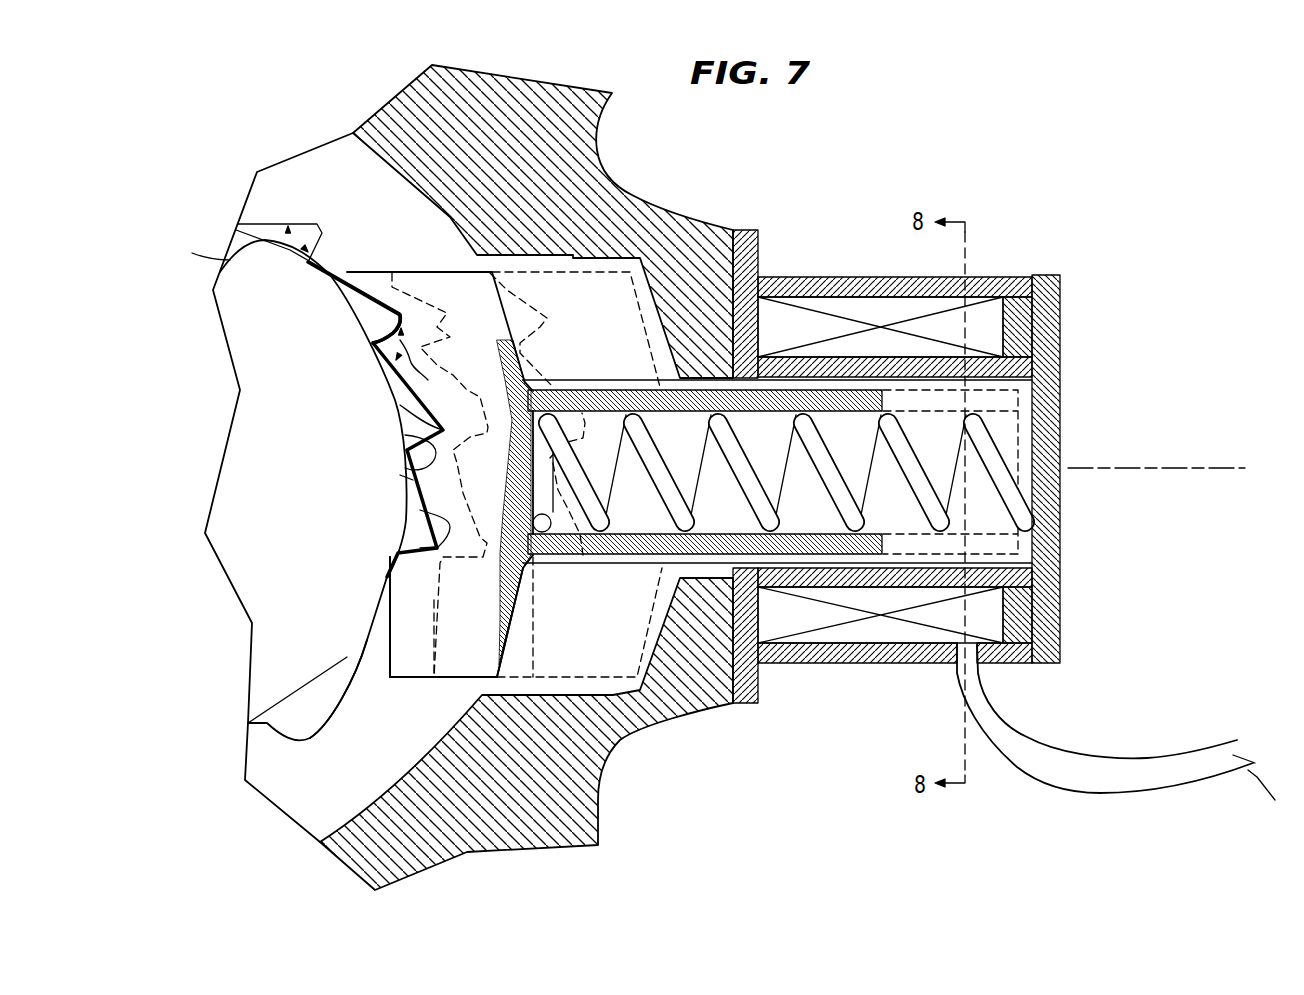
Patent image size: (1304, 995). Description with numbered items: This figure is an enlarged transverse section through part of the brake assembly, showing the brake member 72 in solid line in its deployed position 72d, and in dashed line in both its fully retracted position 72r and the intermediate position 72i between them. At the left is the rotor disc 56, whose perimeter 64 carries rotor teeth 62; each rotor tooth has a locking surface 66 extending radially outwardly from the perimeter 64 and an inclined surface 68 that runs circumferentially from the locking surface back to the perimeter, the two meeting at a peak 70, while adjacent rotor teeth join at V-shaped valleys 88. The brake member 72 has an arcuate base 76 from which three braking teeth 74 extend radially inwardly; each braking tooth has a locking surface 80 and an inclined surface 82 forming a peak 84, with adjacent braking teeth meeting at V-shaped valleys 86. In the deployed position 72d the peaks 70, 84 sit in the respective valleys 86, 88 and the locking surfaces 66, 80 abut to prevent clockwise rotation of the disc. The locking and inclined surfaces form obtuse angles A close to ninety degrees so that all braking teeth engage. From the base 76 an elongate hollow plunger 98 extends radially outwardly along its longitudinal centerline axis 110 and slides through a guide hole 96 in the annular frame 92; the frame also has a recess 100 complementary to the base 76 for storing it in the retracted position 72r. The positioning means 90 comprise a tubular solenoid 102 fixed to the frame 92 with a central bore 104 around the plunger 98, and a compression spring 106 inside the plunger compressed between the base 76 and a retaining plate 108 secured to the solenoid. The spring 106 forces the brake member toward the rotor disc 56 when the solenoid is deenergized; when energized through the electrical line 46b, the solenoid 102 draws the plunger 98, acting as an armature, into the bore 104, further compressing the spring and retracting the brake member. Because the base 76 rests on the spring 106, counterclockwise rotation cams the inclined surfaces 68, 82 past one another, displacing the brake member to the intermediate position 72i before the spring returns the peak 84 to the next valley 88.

The electrical line 46b is at (1030, 754).
The rotor disc 56 is at (230, 355).
The rotor teeth 62 is at (320, 698).
The perimeter 64 is at (360, 633).
The locking surface 66 is at (405, 435).
The inclined surface 68 is at (420, 510).
The peak 70 is at (400, 405).
The brake member 72 is at (607, 372).
The deployed position 72d is at (433, 690).
The intermediate position 72i is at (430, 645).
The retracted position 72r is at (537, 623).
The braking tooth 74 is at (386, 588).
The arcuate base 76 is at (432, 268).
The locking surface 80 is at (400, 475).
The inclined surface 82 is at (420, 548).
The peak 84 is at (397, 348).
The V-shaped valleys 86 is at (472, 440).
The V-shaped valleys 88 is at (378, 356).
The positioning means 90 is at (786, 668).
The annular frame 92 is at (518, 845).
The guide hole 96 is at (700, 568).
The plunger 98 is at (613, 553).
The recess 100 is at (575, 256).
The tubular solenoid 102 is at (877, 633).
The central bore 104 is at (1033, 562).
The compression spring 106 is at (830, 470).
The retaining plate 108 is at (1060, 348).
The longitudinal centerline axis 110 is at (1137, 468).